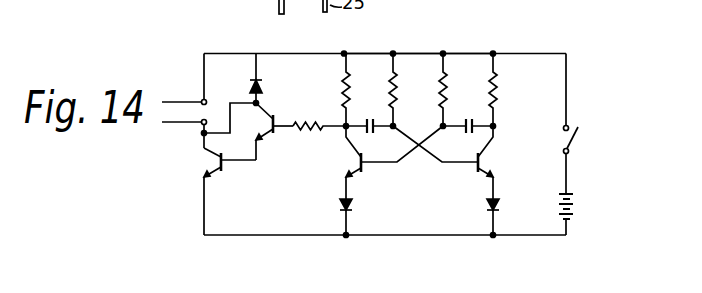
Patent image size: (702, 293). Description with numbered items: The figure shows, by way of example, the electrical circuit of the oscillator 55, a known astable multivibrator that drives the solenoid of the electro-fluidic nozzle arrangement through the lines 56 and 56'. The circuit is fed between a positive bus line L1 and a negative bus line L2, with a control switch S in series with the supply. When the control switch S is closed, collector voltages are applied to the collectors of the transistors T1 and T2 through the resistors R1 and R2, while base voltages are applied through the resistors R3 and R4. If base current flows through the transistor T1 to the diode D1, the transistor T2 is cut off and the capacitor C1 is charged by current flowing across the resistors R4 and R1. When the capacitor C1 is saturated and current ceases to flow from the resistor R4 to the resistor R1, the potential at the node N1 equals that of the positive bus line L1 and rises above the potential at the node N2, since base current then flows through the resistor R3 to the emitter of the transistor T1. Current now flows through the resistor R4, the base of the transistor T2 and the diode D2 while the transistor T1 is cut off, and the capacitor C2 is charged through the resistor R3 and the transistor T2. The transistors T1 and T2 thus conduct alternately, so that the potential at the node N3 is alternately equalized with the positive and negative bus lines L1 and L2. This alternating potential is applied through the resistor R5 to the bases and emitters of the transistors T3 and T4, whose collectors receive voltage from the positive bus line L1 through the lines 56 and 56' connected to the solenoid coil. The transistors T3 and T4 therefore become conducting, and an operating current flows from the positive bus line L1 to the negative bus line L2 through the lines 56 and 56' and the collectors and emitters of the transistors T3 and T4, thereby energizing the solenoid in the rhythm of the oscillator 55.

The oscillator 55 is at (443, 52).
The line 56 is at (179, 84).
The line 56' is at (184, 142).
The positive bus line L1 is at (382, 53).
The negative bus line L2 is at (417, 235).
The resistor R1 is at (504, 88).
The resistor R2 is at (331, 88).
The resistor R3 is at (382, 88).
The resistor R4 is at (455, 88).
The resistor R5 is at (315, 139).
The capacitor C1 is at (469, 139).
The capacitor C2 is at (373, 139).
The node N1 is at (436, 122).
The node N2 is at (407, 122).
The node N3 is at (334, 141).
The transistor T1 is at (475, 164).
The transistor T2 is at (363, 164).
The transistor T3 is at (274, 138).
The transistor T4 is at (230, 191).
The diode D1 is at (508, 216).
The diode D2 is at (331, 217).
The control switch S is at (578, 124).